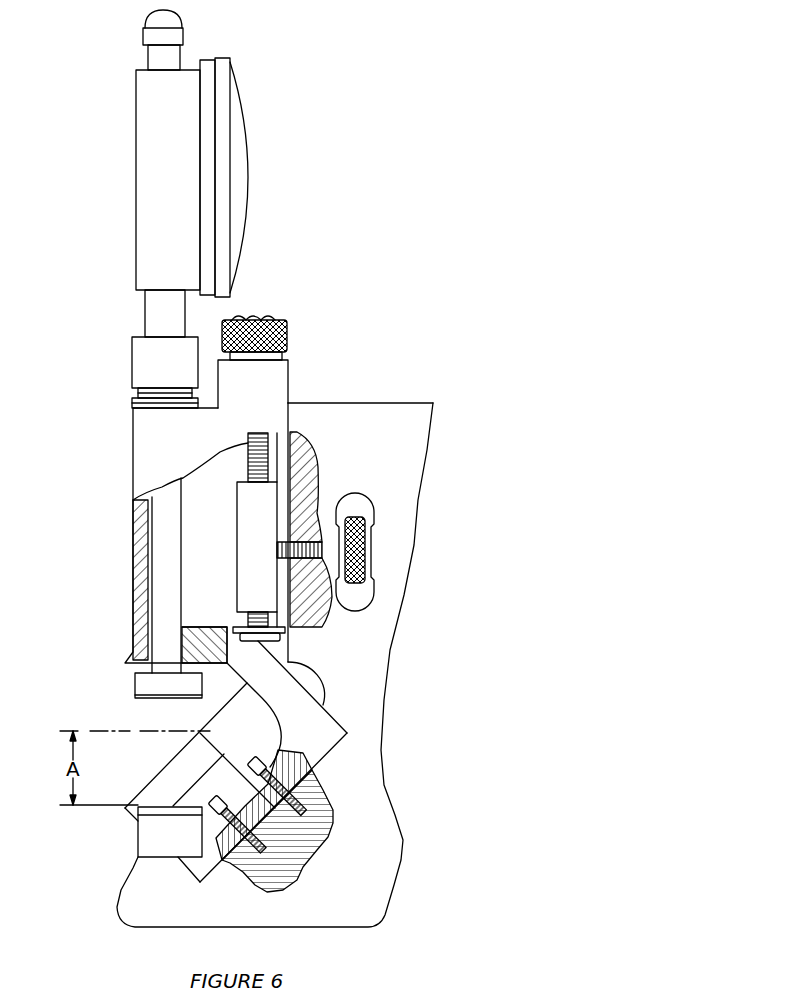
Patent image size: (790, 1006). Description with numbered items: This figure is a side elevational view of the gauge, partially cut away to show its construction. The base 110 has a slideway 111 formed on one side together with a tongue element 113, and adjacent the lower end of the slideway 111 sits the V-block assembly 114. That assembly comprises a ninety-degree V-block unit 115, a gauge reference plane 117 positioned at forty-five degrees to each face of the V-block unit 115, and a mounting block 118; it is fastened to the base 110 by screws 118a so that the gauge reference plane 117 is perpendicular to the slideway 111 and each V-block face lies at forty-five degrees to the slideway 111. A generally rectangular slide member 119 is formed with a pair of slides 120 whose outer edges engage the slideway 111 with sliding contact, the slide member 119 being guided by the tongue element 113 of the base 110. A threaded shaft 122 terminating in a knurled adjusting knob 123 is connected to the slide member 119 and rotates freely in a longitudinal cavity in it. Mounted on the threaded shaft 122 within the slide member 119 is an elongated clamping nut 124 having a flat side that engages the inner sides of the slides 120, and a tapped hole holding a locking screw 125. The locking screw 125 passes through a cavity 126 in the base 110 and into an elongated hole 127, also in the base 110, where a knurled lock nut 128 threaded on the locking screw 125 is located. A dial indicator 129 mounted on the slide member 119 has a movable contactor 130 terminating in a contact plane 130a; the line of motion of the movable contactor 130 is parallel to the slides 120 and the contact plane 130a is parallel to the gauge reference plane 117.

The base 110 is at (402, 488).
The slideway 111 is at (290, 478).
The tongue element 113 is at (285, 415).
The V-block assembly 114 is at (323, 761).
The V-block unit 115 is at (185, 757).
The gauge reference plane 117 is at (150, 806).
The mounting block 118 is at (327, 720).
The screws 118a is at (273, 858).
The slide member 119 is at (137, 574).
The slides 120 is at (290, 371).
The threaded shaft 122 is at (247, 468).
The knurled adjusting knob 123 is at (290, 330).
The clamping nut 124 is at (245, 553).
The locking screw 125 is at (280, 547).
The cavity 126 is at (292, 538).
The elongated hole 127 is at (375, 598).
The knurled lock nut 128 is at (365, 570).
The dial indicator 129 is at (247, 180).
The movable contactor 130 is at (162, 612).
The contact plane 130a is at (133, 698).